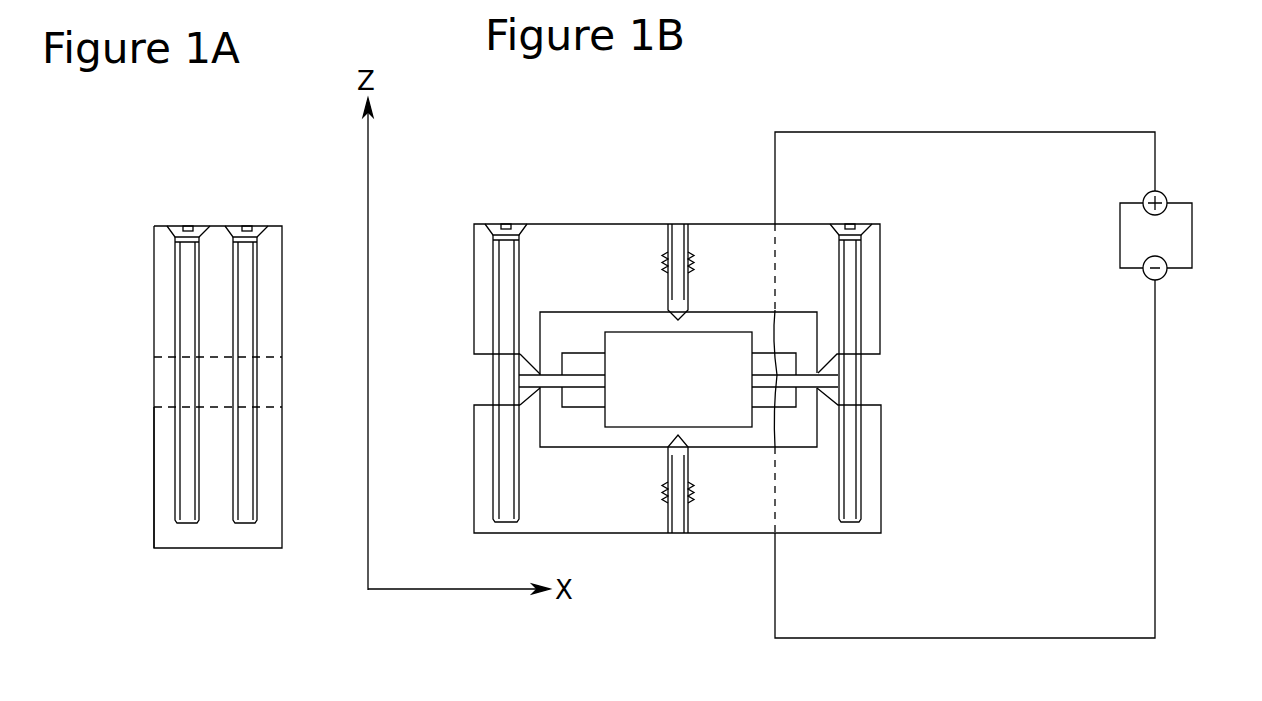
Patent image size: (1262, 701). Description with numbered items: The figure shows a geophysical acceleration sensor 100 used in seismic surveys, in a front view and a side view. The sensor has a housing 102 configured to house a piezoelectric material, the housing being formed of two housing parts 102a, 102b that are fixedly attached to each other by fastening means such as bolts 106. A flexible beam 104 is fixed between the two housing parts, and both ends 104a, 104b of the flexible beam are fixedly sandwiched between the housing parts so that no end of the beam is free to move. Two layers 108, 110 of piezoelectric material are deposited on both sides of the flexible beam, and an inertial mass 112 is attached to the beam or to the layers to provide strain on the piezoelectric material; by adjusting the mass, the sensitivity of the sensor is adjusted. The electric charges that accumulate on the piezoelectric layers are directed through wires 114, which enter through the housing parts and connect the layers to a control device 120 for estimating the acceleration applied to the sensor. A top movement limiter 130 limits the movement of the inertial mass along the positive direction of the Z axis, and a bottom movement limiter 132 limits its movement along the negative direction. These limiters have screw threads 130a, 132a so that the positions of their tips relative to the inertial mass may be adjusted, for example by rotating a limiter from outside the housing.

In FIG. 1A, the geophysical acceleration sensor 100 is at (237, 178).
In FIG. 1B, the geophysical acceleration sensor 100 is at (870, 67).
In FIG. 1B, the housing 102 is at (910, 283).
In FIG. 1A, the housing part 102a is at (165, 281).
In FIG. 1B, the housing part 102a is at (878, 242).
In FIG. 1A, the housing part 102b is at (165, 459).
In FIG. 1B, the housing part 102b is at (873, 478).
In FIG. 1B, the flexible beam 104 is at (553, 375).
In FIG. 1B, the end of the flexible beam 104a is at (528, 379).
In FIG. 1B, the end of the flexible beam 104b is at (830, 378).
In FIG. 1A, the bolts 106 is at (186, 325).
In FIG. 1B, the bolts 106 is at (503, 472).
In FIG. 1B, the piezoelectric layer 108 is at (586, 397).
In FIG. 1B, the piezoelectric layer 110 is at (575, 357).
In FIG. 1B, the inertial mass 112 is at (640, 348).
In FIG. 1B, the wires 114 is at (938, 132).
In FIG. 1B, the control device 120 is at (1163, 192).
In FIG. 1B, the top movement limiter 130 is at (675, 195).
In FIG. 1B, the screw threads 130a is at (696, 262).
In FIG. 1B, the bottom movement limiter 132 is at (683, 508).
In FIG. 1B, the screw threads 132a is at (693, 487).